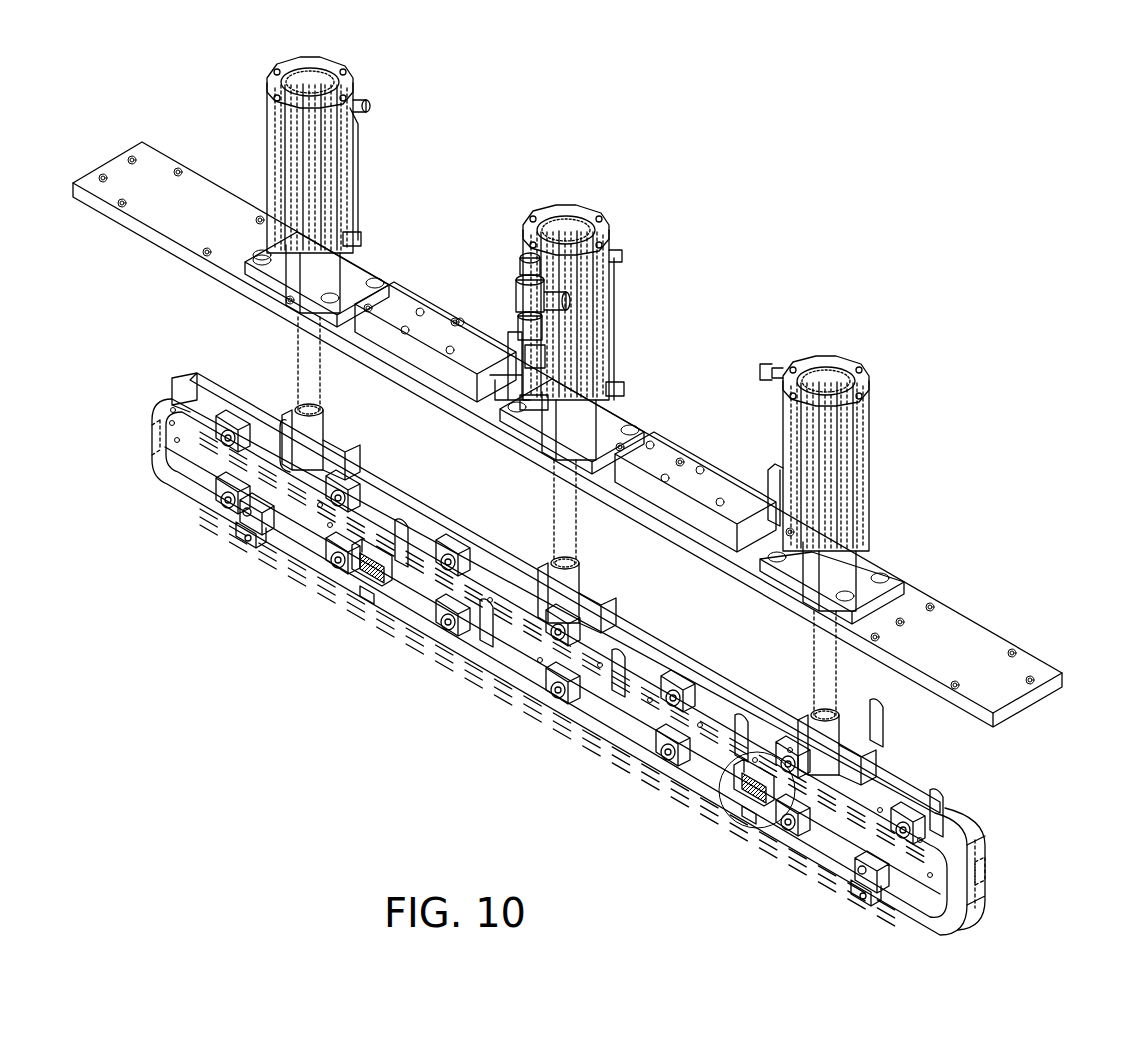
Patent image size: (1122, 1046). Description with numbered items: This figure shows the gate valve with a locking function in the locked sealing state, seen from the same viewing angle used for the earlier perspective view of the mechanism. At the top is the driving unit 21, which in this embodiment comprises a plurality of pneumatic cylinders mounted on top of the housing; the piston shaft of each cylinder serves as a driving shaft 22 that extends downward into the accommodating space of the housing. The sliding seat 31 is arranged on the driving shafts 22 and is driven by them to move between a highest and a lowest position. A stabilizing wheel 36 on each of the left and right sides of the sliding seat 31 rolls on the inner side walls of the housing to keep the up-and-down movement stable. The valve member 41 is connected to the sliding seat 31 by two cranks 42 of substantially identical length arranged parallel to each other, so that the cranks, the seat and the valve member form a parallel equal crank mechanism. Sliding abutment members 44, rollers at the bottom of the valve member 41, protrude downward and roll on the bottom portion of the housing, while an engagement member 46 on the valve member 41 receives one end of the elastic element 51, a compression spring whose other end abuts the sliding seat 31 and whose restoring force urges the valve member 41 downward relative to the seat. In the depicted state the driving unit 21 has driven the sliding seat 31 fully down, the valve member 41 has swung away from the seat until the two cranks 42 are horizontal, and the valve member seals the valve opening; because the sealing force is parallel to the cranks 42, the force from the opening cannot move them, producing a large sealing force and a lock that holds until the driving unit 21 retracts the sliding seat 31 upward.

The driving unit 21 is at (580, 204).
The driving shaft 22 is at (296, 368).
The sliding seat 31 is at (990, 831).
The stabilizing wheel 36 is at (980, 880).
The valve member 41 is at (592, 741).
The cranks 42 is at (432, 574).
The sliding abutment members 44 is at (245, 538).
The engagement member 46 is at (364, 600).
The elastic element 51 is at (370, 573).